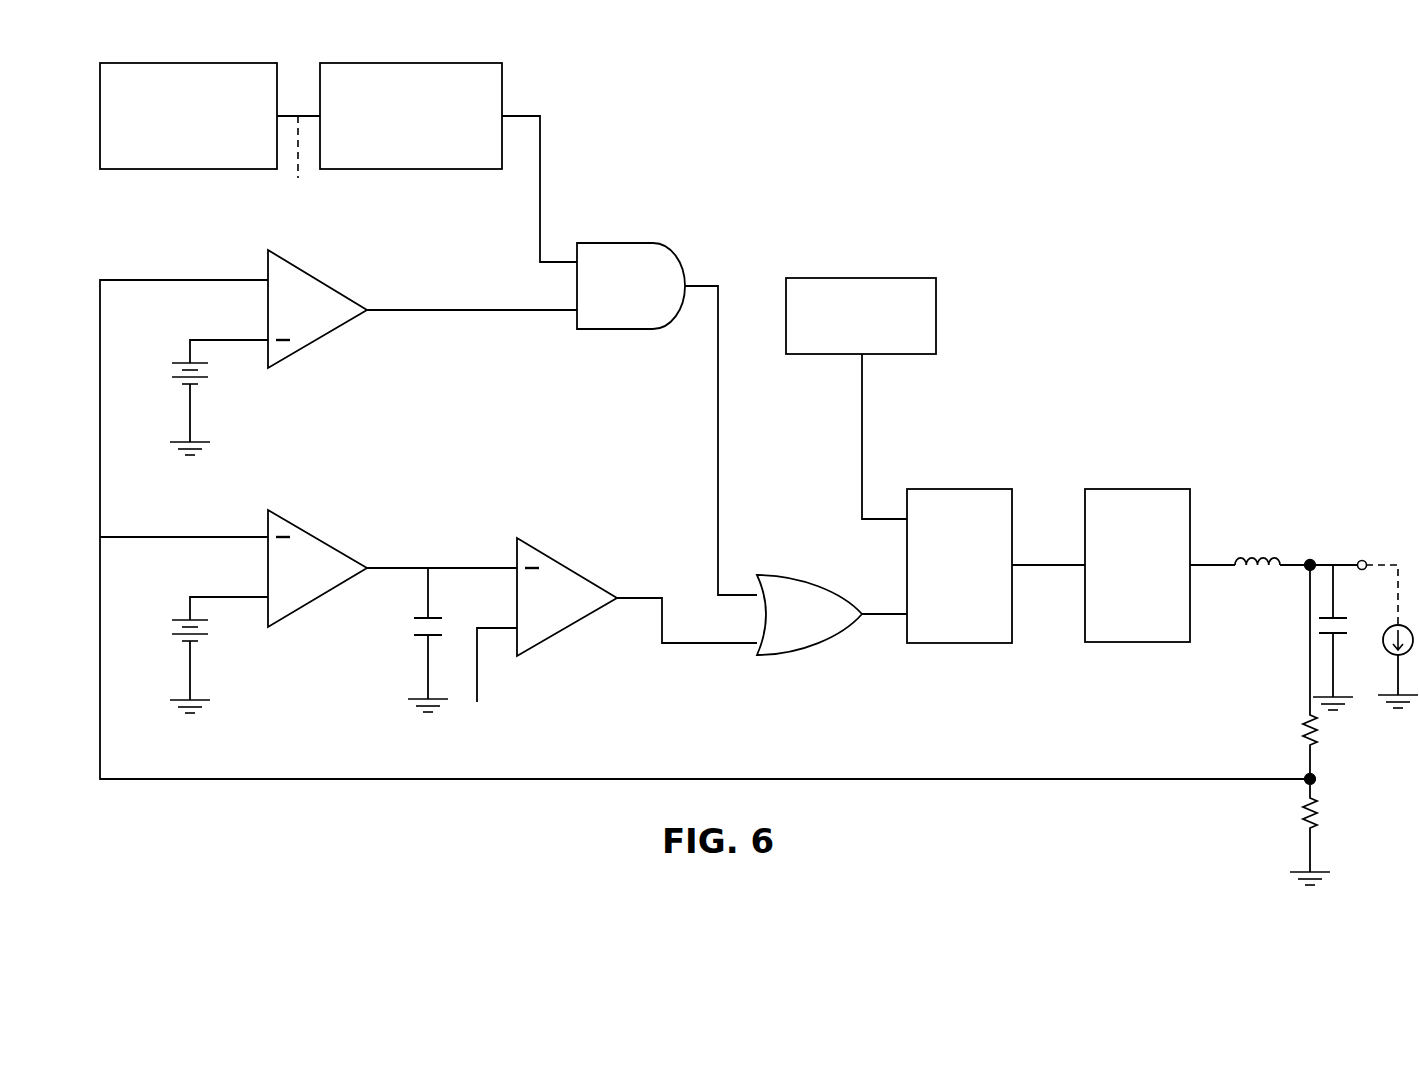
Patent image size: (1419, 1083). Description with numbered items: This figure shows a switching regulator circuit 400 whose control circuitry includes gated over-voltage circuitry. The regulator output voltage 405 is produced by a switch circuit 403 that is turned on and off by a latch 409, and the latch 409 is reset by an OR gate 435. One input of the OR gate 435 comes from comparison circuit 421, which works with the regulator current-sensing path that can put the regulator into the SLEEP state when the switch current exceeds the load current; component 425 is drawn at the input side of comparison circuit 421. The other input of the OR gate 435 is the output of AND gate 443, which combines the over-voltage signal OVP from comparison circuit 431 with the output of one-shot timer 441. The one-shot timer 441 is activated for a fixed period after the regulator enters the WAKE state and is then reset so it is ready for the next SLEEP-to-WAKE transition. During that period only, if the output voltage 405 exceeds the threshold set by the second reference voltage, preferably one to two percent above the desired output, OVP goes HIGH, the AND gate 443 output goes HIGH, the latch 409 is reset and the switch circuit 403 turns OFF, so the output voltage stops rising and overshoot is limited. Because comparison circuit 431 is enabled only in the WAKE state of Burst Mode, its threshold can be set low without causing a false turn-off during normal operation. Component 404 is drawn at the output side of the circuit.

The regulator control circuit 400 is at (1139, 180).
The one-shot circuit 441 is at (360, 169).
The comparison circuit 431 is at (308, 274).
The AND gate 443 is at (632, 243).
The comparison circuit 421 is at (562, 566).
The compensation capacitor 425 is at (475, 650).
The OR gate 435 is at (805, 657).
The latch 409 is at (955, 645).
The switch circuit 403 is at (1130, 643).
The regulator output 405 is at (1293, 558).
The load current source 404 is at (1383, 640).